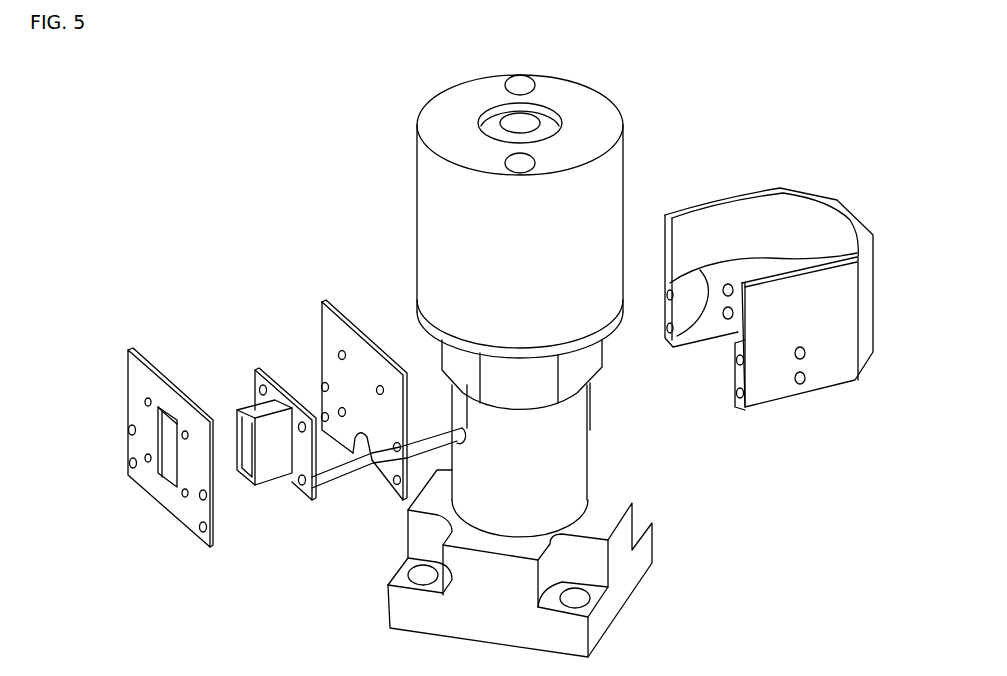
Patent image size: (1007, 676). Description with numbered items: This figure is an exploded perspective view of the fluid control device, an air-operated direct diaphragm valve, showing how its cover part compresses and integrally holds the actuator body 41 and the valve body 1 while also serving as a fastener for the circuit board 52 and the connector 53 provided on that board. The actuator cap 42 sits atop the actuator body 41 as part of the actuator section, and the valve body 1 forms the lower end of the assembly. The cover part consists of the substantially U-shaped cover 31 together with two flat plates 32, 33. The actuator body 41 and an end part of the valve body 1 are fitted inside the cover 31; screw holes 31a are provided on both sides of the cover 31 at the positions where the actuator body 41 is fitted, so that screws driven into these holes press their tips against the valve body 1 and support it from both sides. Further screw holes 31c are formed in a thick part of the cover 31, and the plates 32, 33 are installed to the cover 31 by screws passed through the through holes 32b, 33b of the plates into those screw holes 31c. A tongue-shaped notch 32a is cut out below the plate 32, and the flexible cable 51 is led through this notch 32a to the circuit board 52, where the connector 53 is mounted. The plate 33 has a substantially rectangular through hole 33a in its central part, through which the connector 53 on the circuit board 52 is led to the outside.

The valve body 1 is at (652, 523).
The cover 31 is at (837, 198).
The screw hole 31a is at (734, 291).
The screw hole 31c is at (672, 300).
The flat plate 32 is at (322, 302).
The notch 32a is at (368, 446).
The through hole 32b is at (329, 384).
The flat plate 33 is at (128, 350).
The through hole 33a is at (157, 473).
The through hole 33b is at (129, 430).
The actuator body 41 is at (602, 365).
The actuator cap 42 is at (418, 162).
The flexible cable 51 is at (448, 430).
The circuit board 52 is at (303, 492).
The connector 53 is at (239, 408).